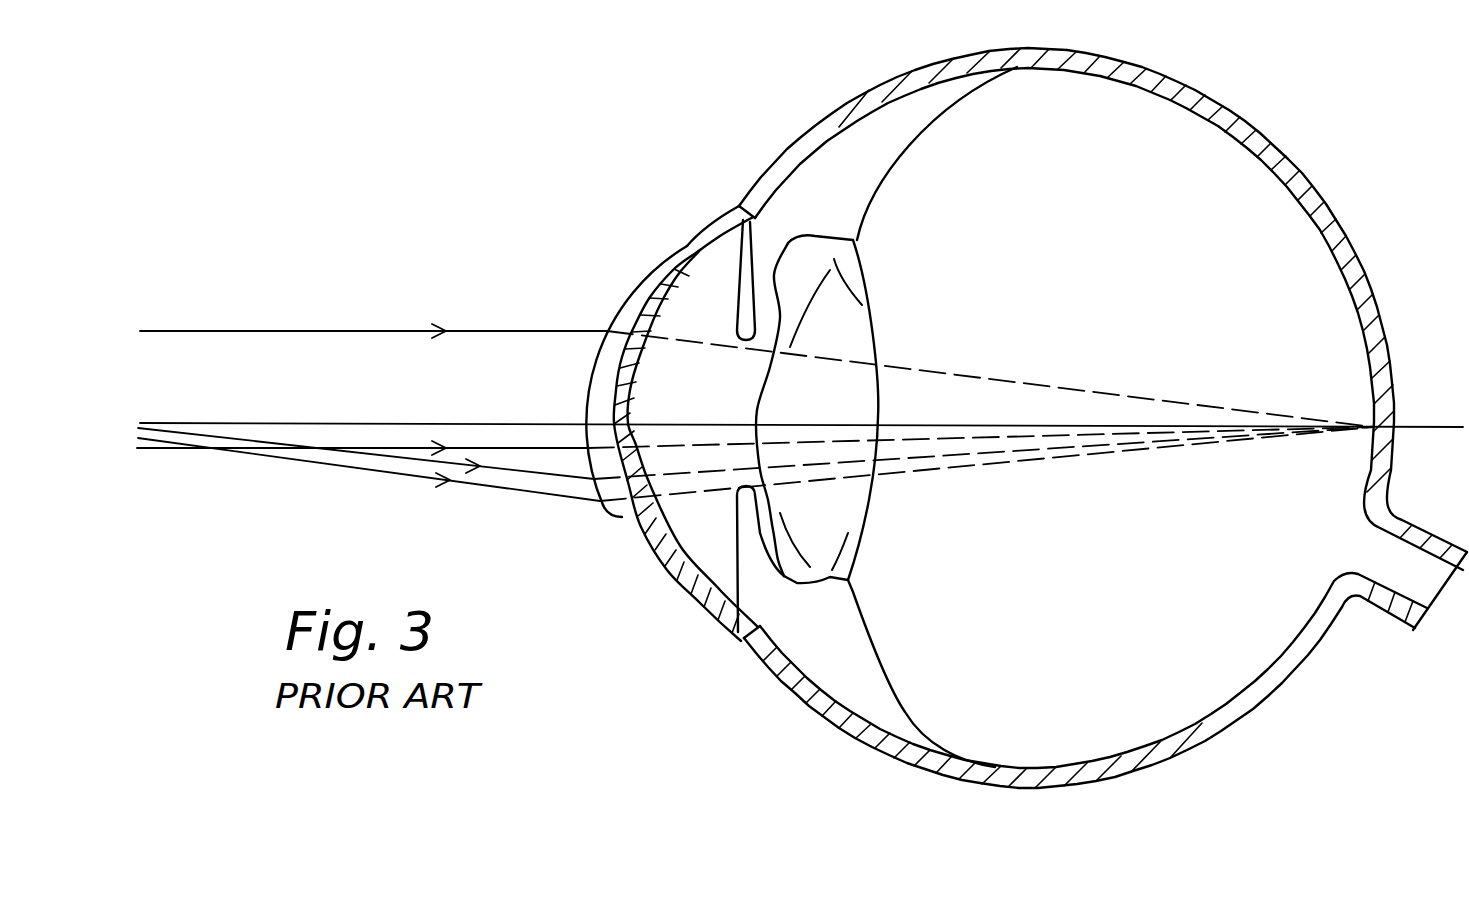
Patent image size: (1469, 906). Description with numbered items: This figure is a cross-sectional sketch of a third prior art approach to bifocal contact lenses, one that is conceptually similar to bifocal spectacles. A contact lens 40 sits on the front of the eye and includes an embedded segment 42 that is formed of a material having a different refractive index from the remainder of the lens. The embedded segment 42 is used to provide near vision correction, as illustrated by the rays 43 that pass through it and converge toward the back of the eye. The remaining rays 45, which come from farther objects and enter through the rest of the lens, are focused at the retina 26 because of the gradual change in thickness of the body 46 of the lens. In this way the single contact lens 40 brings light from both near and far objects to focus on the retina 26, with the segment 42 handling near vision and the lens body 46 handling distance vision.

The retina 26 is at (1377, 432).
The contact lens 40 is at (632, 339).
The embedded segment 42 is at (615, 510).
The rays 43 is at (515, 494).
The remaining rays 45 is at (515, 330).
The body 46 is at (598, 400).